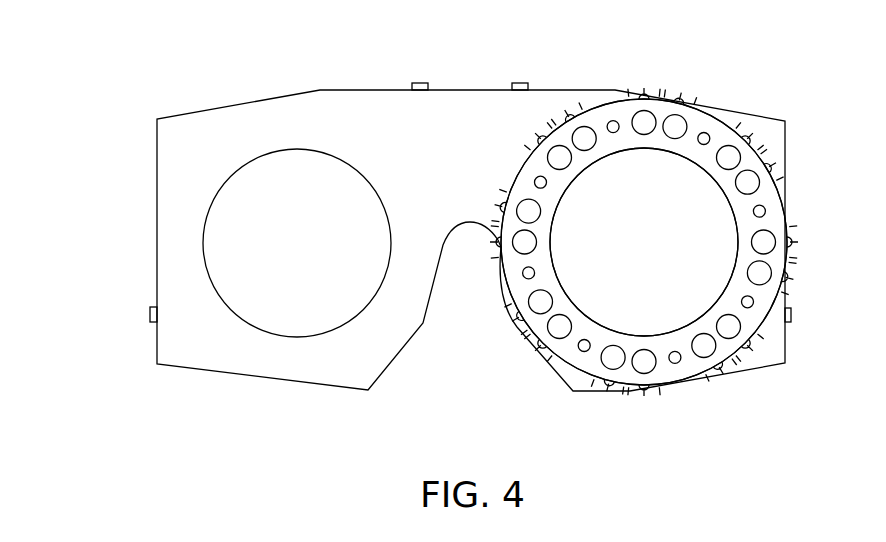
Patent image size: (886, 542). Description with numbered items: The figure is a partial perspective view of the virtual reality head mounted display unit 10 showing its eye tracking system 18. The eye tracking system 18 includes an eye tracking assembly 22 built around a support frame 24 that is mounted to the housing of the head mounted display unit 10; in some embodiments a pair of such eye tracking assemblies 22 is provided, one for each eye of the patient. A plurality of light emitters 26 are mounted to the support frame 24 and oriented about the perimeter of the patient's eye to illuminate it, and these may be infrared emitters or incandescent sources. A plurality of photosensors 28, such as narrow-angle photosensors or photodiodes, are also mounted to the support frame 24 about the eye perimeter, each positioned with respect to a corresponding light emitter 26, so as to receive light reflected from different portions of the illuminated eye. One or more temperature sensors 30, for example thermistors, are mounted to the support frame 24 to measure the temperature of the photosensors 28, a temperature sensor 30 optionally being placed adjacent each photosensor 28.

The virtual reality head mounted display unit 10 is at (100, 192).
The eye tracking system 18 is at (671, 68).
The eye tracking assembly 22 is at (787, 220).
The support frame 24 is at (762, 313).
The light emitter 26 is at (617, 358).
The photosensor 28 is at (647, 363).
The temperature sensor 30 is at (680, 358).